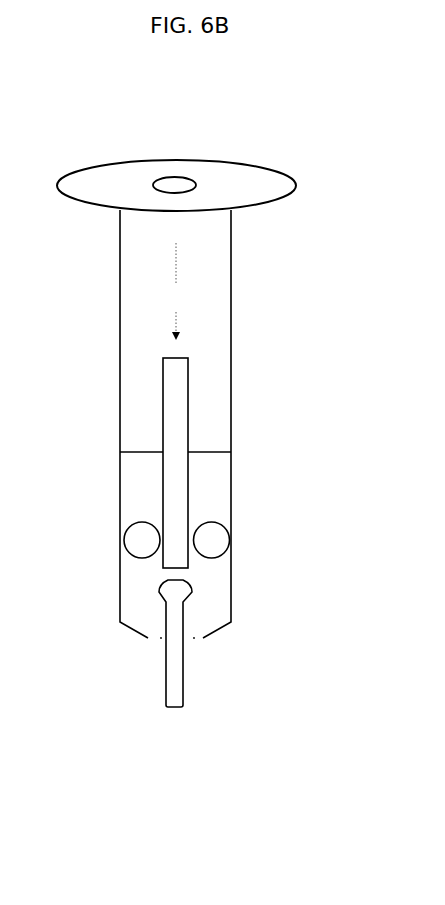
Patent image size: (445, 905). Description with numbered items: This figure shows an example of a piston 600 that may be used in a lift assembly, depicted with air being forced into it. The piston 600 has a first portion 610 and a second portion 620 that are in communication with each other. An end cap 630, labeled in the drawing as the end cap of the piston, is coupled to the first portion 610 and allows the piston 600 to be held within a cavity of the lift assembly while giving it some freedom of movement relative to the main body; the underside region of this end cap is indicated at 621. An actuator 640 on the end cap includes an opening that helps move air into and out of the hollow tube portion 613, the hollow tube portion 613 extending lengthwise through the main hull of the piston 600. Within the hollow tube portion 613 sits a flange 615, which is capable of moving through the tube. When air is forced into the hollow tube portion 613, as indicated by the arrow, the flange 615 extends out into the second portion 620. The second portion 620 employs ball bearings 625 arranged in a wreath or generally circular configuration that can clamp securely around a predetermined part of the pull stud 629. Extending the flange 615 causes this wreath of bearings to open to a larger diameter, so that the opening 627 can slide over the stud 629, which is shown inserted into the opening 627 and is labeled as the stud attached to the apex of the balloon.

The piston 600 is at (398, 101).
The first portion 610 is at (118, 292).
The hollow tube portion 613 is at (216, 320).
The flange 615 is at (188, 395).
The second portion 620 is at (118, 497).
The underside of end cap 621 is at (75, 200).
The ball bearings 625 is at (212, 545).
The opening 627 is at (155, 638).
The pull stud 629 is at (177, 592).
The end cap 630 is at (292, 197).
The actuator 640 is at (168, 185).